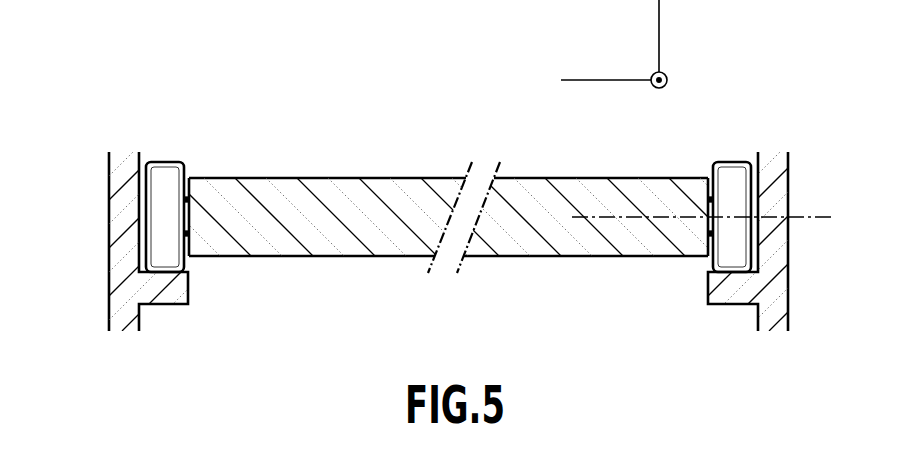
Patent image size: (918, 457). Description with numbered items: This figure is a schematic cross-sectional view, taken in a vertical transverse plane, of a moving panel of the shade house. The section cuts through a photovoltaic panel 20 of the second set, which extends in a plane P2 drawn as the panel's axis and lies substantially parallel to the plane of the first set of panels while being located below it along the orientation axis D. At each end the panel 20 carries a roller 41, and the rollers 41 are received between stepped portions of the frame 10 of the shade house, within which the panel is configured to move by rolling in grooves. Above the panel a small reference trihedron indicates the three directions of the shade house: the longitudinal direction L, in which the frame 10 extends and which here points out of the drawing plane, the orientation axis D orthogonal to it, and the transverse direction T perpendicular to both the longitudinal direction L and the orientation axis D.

The frame 10 is at (125, 279).
The photovoltaic panel 20 is at (333, 190).
The roller 41 is at (165, 172).
The plane P2 is at (717, 218).
The orientation axis D is at (660, 30).
The transverse direction T is at (585, 80).
The longitudinal direction L is at (664, 87).